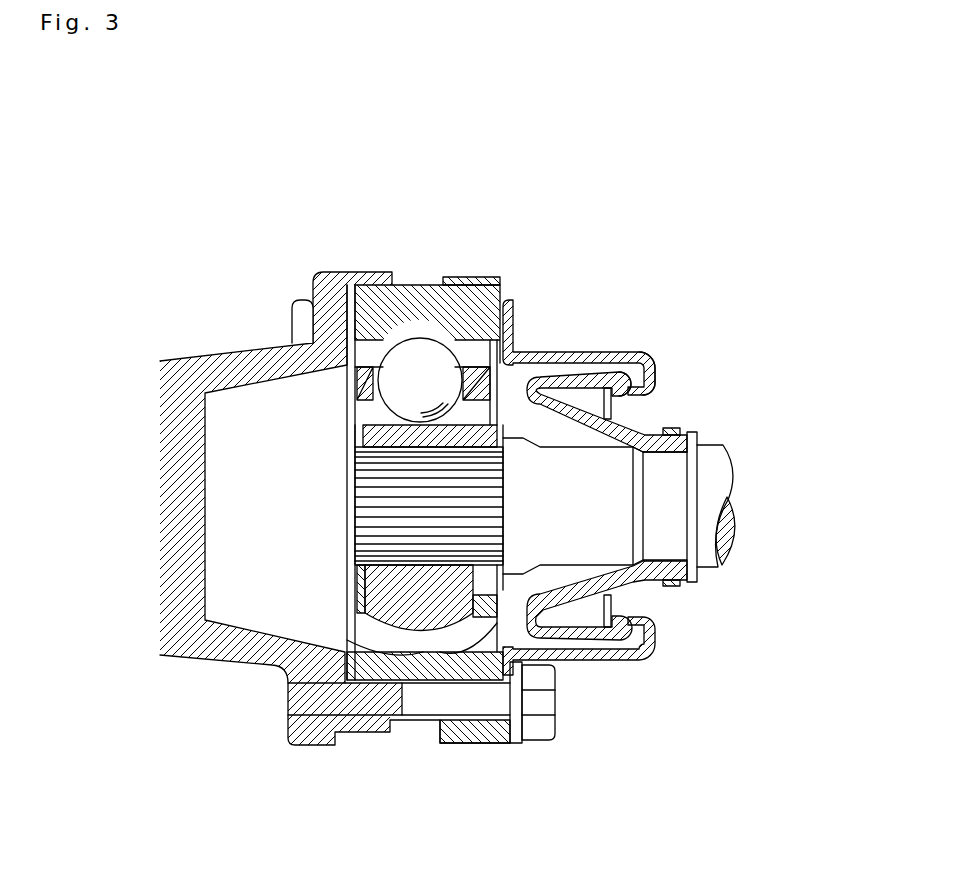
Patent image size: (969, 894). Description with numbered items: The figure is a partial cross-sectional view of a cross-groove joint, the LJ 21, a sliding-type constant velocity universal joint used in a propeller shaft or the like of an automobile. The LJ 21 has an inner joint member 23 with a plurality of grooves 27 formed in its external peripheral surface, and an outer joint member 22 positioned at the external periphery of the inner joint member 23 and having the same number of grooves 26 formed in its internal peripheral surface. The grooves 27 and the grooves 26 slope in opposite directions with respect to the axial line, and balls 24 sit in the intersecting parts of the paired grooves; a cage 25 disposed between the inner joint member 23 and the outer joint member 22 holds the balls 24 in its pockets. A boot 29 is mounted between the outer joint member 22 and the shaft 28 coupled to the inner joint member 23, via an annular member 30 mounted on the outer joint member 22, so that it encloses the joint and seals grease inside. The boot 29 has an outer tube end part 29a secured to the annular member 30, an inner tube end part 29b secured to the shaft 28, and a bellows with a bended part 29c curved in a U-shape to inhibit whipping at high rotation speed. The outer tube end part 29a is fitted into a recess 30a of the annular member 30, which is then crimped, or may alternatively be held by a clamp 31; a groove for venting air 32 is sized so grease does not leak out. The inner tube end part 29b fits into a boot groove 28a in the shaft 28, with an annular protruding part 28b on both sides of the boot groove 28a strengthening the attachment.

The cross-groove joint (LJ) 21 is at (662, 241).
The outer joint member 22 is at (428, 432).
The inner joint member 23 is at (398, 607).
The balls 24 is at (421, 357).
The cage 25 is at (450, 640).
The grooves of the outer joint member 26 is at (483, 343).
The grooves of the inner joint member 27 is at (355, 395).
The shaft 28 is at (591, 578).
The boot groove 28a is at (668, 508).
The annular protruding part 28b is at (690, 478).
The boot 29 is at (669, 516).
The outer tube end part 29a is at (647, 373).
The inner tube end part 29b is at (692, 575).
The bended part 29c is at (547, 653).
The annular member 30 is at (638, 459).
The recess 30a is at (655, 378).
The clamp 31 is at (672, 584).
The groove for venting air 32 is at (688, 440).